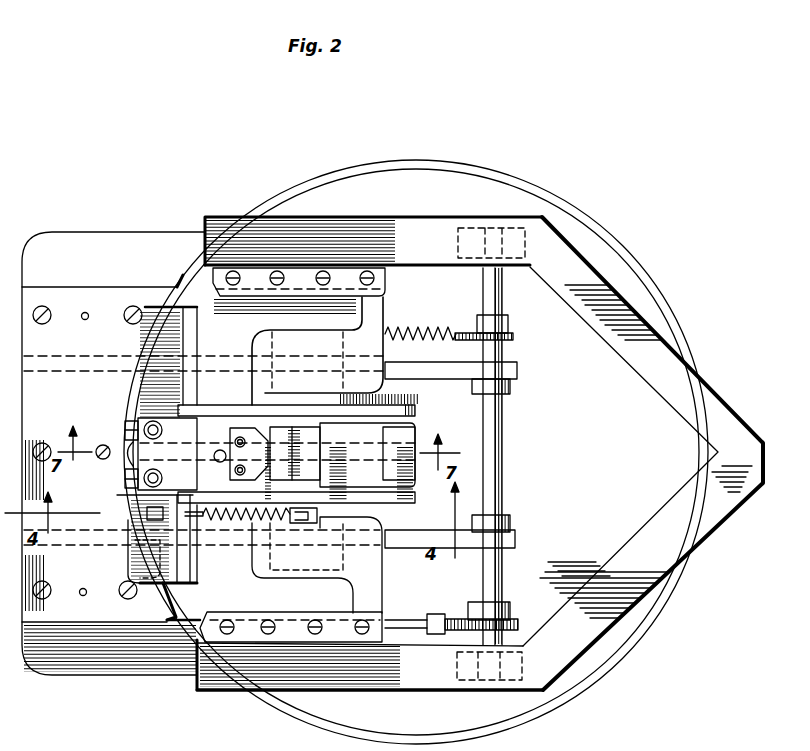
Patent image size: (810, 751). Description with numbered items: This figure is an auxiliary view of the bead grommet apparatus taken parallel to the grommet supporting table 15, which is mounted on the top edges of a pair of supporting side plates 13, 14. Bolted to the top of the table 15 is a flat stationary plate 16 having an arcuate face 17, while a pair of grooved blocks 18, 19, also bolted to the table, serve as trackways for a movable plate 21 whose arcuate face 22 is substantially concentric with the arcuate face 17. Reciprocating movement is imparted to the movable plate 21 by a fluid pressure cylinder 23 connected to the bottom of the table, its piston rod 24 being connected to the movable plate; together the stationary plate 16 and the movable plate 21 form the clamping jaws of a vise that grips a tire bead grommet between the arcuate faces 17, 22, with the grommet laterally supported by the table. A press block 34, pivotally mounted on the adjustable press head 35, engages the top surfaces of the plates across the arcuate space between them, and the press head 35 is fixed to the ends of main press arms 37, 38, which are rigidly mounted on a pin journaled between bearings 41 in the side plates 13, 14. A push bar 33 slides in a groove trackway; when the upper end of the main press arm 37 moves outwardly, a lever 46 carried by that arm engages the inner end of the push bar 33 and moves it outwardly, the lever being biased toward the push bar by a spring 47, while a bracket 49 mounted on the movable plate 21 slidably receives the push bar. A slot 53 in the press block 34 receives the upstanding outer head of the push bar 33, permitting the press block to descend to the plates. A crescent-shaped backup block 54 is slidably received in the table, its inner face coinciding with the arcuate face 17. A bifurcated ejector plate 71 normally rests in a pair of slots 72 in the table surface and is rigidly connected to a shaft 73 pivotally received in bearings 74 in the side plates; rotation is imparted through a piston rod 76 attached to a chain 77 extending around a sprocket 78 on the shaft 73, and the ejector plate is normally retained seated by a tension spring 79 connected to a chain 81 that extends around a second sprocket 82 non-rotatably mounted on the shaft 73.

The supporting side plate 13 is at (510, 538).
The supporting side plate 14 is at (515, 370).
The grommet supporting table 15 is at (92, 662).
The flat stationary plate 16 is at (113, 607).
The arcuate face 17 is at (170, 598).
The grooved block 18 is at (385, 278).
The grooved block 19 is at (380, 633).
The movable plate 21 is at (200, 297).
The arcuate face 22 is at (190, 610).
The fluid pressure cylinder 23 is at (398, 442).
The piston rod 24 is at (283, 453).
The push bar 33 is at (157, 513).
The press block 34 is at (187, 347).
The adjustable press head 35 is at (128, 430).
The main press arm 37 is at (215, 497).
The main press arm 38 is at (208, 413).
The bearing 41 is at (335, 350).
The lever 46 is at (308, 518).
The spring 47 is at (255, 523).
The bracket 49 is at (230, 520).
The slot 53 is at (127, 512).
The backup block 54 is at (127, 527).
The ejector plate 71 is at (367, 672).
The slot 72 is at (200, 238).
The shaft 73 is at (488, 443).
The bearing 74 is at (510, 388).
The piston rod 76 is at (405, 613).
The chain 77 is at (455, 617).
The sprocket 78 is at (525, 617).
The tension spring 79 is at (410, 328).
The chain 81 is at (467, 320).
The sprocket 82 is at (513, 337).